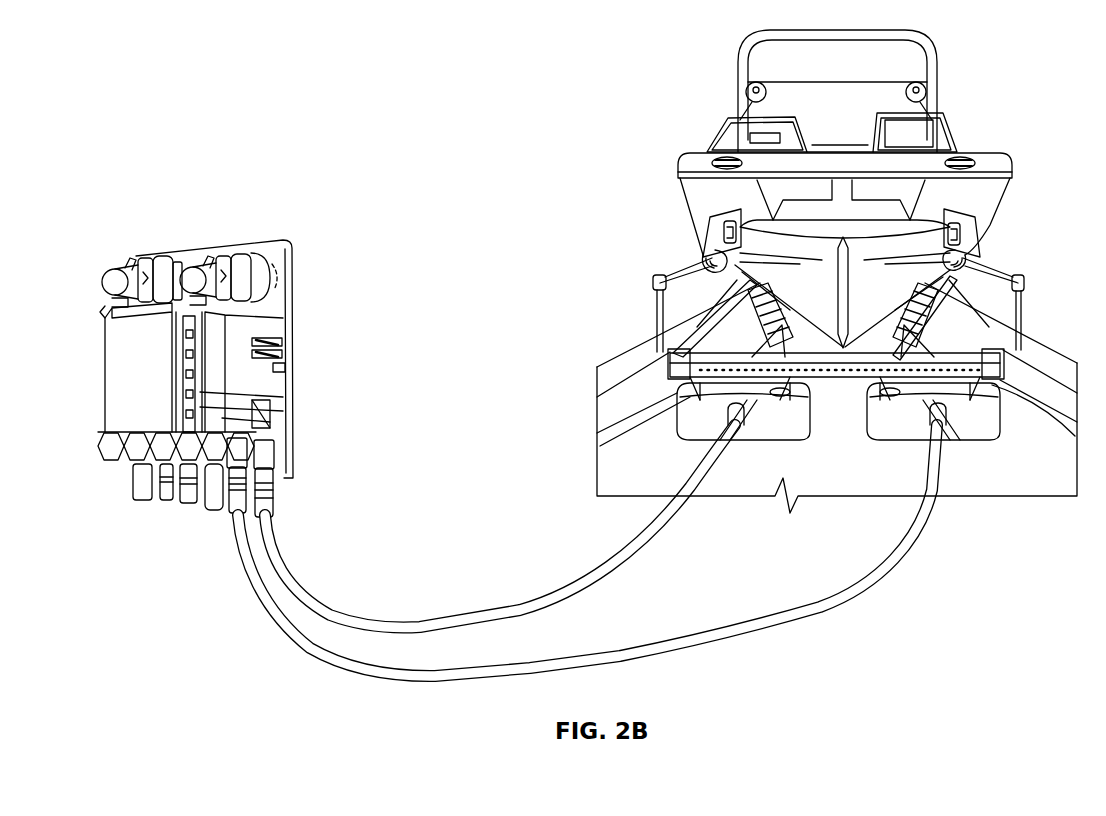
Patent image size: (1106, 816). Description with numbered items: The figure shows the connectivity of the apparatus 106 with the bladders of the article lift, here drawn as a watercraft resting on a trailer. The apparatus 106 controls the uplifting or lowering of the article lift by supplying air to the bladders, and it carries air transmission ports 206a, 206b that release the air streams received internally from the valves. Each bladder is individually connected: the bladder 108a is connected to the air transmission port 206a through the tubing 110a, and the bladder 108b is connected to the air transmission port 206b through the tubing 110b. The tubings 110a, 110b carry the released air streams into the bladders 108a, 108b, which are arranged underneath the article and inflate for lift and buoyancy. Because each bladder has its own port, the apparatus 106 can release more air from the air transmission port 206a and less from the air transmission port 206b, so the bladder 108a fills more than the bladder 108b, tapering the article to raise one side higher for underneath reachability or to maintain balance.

The apparatus 106 is at (225, 398).
The air transmission port 206a is at (272, 503).
The air transmission port 206b is at (227, 503).
The bladder 108a is at (753, 432).
The bladder 108b is at (905, 430).
The tubing 110a is at (652, 535).
The tubing 110b is at (916, 534).